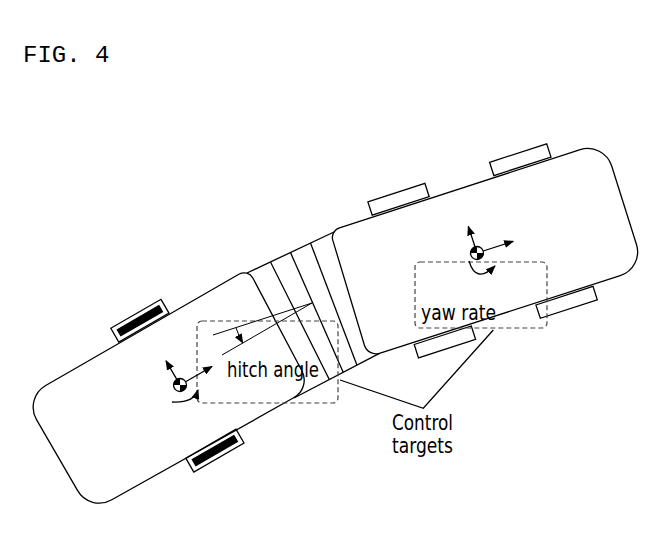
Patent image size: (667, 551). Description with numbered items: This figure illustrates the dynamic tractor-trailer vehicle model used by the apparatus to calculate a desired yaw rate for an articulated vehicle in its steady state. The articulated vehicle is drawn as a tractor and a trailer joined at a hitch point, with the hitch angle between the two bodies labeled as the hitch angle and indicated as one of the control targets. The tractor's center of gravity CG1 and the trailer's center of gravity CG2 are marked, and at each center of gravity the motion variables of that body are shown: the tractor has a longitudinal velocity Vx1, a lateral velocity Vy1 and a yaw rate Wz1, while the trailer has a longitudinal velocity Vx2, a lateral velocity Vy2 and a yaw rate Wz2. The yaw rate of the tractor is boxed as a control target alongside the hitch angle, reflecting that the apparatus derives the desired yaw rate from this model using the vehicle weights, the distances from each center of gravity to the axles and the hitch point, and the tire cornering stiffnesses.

The center of gravity of front vehicle body CG1 is at (458, 261).
The center of gravity of rear vehicle body CG2 is at (160, 395).
The longitudinal velocity of front body Vx1 is at (512, 243).
The lateral velocity of front body Vy1 is at (464, 223).
The yaw rate of front body Wz1 is at (483, 280).
The longitudinal velocity of rear body Vx2 is at (205, 383).
The lateral velocity of rear body Vy2 is at (162, 356).
The yaw rate of rear body Wz2 is at (187, 410).